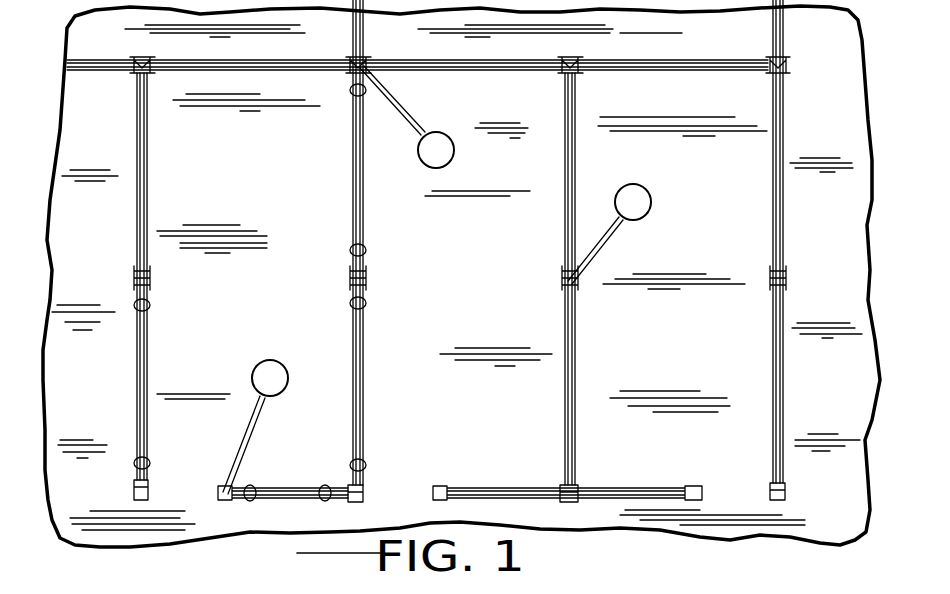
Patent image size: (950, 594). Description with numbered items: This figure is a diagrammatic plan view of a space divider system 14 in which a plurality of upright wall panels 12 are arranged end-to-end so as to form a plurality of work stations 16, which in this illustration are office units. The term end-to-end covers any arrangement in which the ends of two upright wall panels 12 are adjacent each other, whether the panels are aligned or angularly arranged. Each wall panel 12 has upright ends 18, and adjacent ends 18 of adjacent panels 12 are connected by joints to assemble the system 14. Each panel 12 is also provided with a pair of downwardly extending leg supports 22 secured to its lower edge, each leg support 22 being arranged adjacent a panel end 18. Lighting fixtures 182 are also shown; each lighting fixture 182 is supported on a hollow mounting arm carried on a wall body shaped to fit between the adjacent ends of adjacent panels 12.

The wall panel 12 is at (364, 405).
The space divider system 14 is at (289, 500).
The work station 16 is at (256, 179).
The upright end 18 is at (350, 278).
The leg support 22 is at (367, 303).
The lighting fixture 182 is at (270, 361).